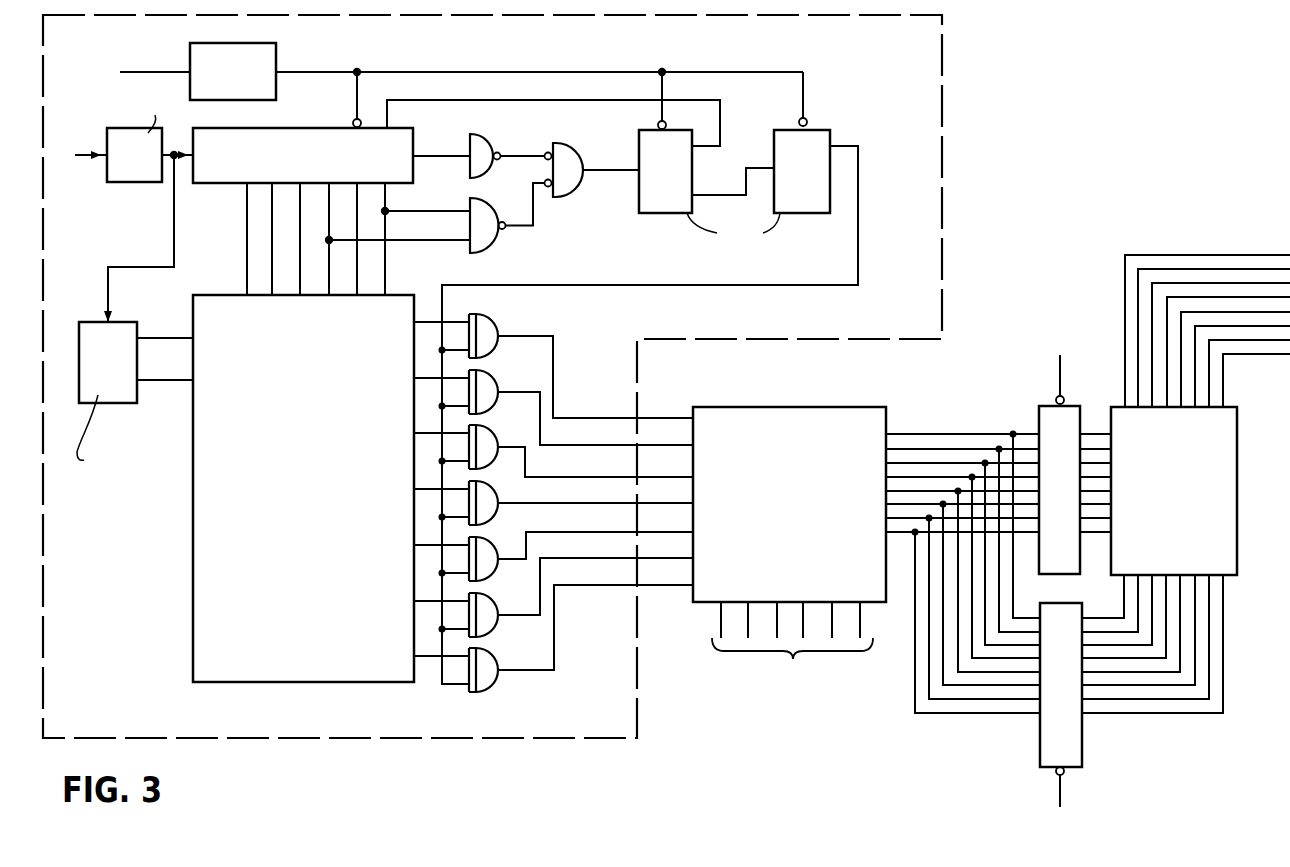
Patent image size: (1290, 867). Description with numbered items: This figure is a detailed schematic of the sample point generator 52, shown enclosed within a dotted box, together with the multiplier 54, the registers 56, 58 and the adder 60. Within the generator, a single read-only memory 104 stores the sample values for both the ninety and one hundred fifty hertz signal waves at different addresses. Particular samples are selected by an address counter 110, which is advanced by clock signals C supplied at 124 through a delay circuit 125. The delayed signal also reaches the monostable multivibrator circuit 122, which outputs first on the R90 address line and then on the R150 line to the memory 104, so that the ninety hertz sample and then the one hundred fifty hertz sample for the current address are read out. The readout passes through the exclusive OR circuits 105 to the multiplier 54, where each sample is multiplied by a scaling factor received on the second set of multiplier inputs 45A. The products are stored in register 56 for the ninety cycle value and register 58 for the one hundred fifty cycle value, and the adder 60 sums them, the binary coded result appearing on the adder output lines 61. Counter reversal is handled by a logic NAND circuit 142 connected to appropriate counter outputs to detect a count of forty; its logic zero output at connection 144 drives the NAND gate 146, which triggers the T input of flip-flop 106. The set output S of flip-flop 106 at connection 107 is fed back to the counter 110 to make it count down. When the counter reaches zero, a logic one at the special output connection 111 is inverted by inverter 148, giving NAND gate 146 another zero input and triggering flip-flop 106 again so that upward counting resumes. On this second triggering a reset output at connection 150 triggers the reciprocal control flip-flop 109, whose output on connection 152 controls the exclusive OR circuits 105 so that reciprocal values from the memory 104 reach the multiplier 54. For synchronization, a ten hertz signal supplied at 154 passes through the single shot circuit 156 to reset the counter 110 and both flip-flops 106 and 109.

The sample point generator 52 is at (513, 740).
The synchronizing signal input 154 is at (158, 67).
The single shot circuit 156 is at (277, 55).
The delay circuit 125 is at (145, 183).
The clock signal input 124 is at (83, 158).
The address counter 110 is at (273, 128).
The special output connection 111 is at (427, 153).
The inverter 148 is at (488, 135).
The logic NAND circuit 142 is at (495, 247).
The connection 144 is at (533, 207).
The NAND gate 146 is at (580, 147).
The flip-flop 106 is at (665, 214).
The connection 107 is at (722, 118).
The reset output connection 150 is at (723, 197).
The reciprocal control flip-flop 109 is at (817, 128).
The connection 152 is at (860, 245).
The monostable multivibrator circuit 122 is at (118, 405).
The read-only memory 104 is at (193, 497).
The exclusive OR circuits 105 is at (488, 313).
The multiplier 54 is at (725, 405).
The multiplier inputs 45A is at (792, 666).
The register 58 is at (1037, 412).
The register 56 is at (1082, 732).
The adder 60 is at (1240, 450).
The adder output lines 61 is at (1113, 328).